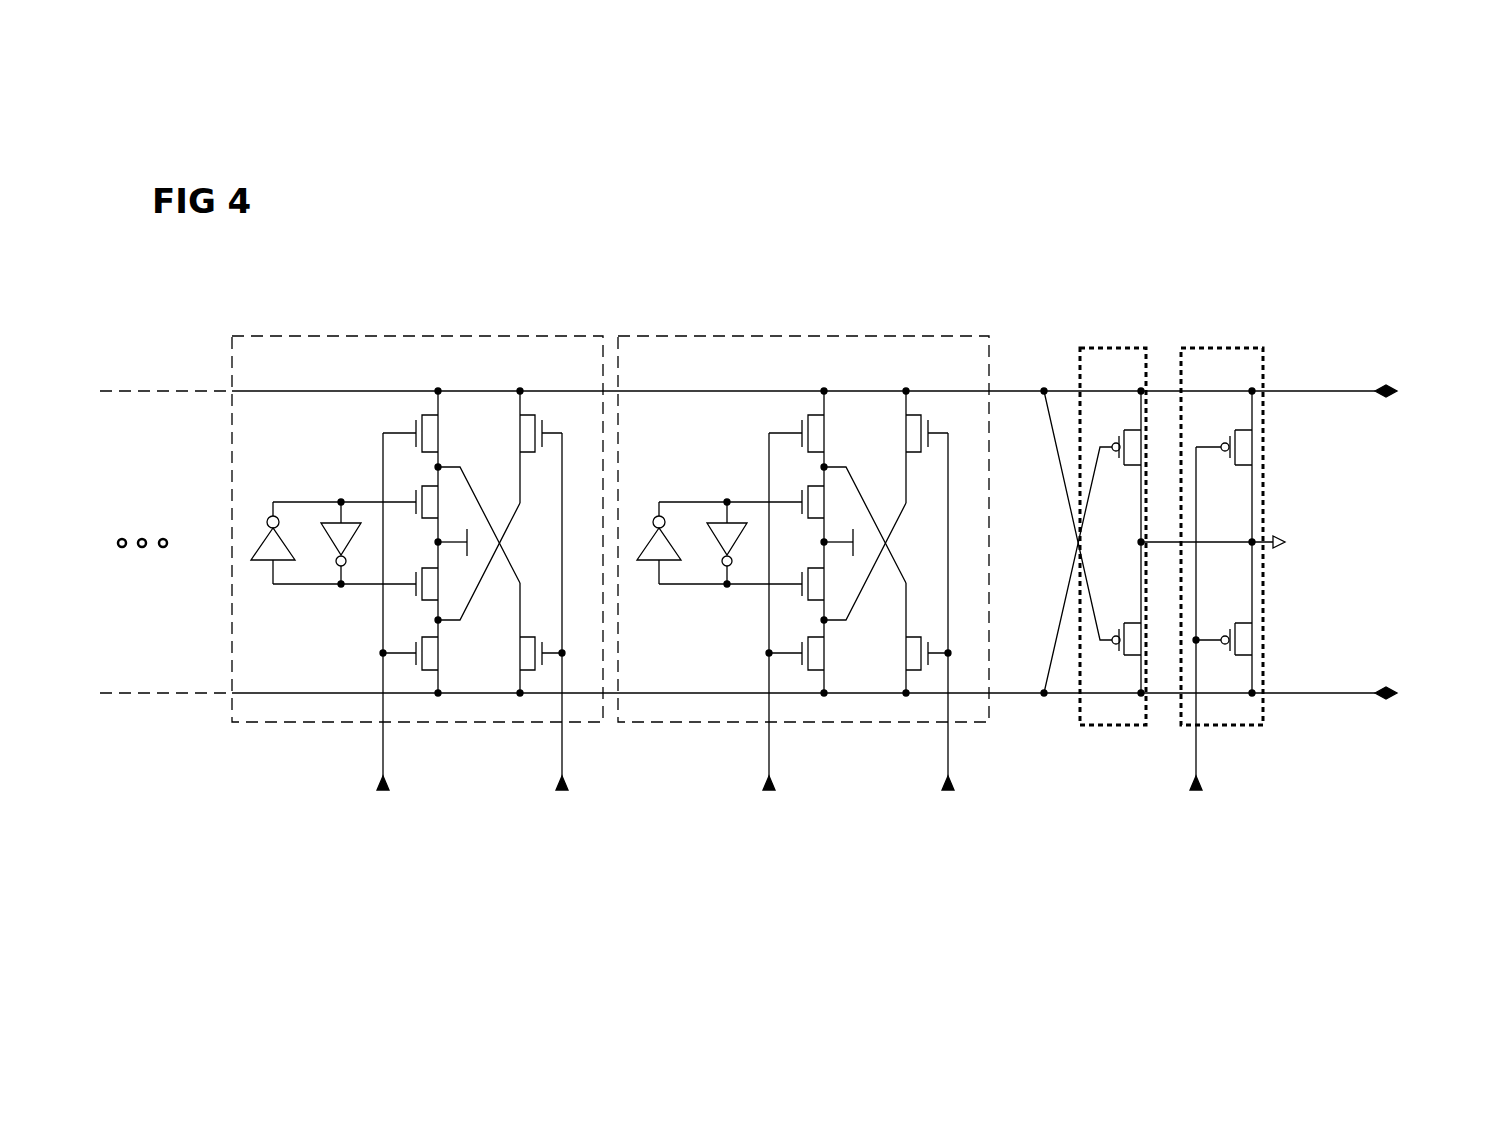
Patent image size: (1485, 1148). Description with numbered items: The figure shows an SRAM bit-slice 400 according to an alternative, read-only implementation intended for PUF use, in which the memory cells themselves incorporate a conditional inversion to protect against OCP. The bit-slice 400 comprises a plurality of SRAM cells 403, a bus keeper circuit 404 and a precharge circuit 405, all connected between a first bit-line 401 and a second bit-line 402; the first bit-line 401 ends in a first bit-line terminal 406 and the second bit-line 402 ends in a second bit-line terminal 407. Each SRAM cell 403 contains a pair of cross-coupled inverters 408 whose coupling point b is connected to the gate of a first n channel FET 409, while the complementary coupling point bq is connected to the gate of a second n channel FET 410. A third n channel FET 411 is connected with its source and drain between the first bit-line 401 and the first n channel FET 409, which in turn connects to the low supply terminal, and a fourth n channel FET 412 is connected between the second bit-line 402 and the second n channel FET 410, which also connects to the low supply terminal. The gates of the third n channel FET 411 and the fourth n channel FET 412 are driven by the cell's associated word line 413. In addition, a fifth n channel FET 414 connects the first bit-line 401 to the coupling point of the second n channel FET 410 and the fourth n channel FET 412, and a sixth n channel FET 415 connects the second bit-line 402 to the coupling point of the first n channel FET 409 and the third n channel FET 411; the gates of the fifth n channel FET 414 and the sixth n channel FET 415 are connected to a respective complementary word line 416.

The SRAM bit-slice 400 is at (1372, 248).
The first bit-line 401 is at (202, 391).
The second bit-line 402 is at (190, 693).
The SRAM cell 403 is at (565, 337).
The bus keeper circuit 404 is at (1143, 347).
The precharge circuit 405 is at (1253, 347).
The first bit-line terminal 406 is at (1360, 391).
The second bit-line terminal 407 is at (1360, 693).
The cross-coupled inverters 408 is at (268, 524).
The first n channel FET 409 is at (440, 494).
The second n channel FET 410 is at (422, 602).
The third n channel FET 411 is at (428, 434).
The fourth n channel FET 412 is at (435, 657).
The word line 413 is at (383, 750).
The fifth n channel FET 414 is at (551, 423).
The sixth n channel FET 415 is at (535, 678).
The complementary word line 416 is at (562, 752).